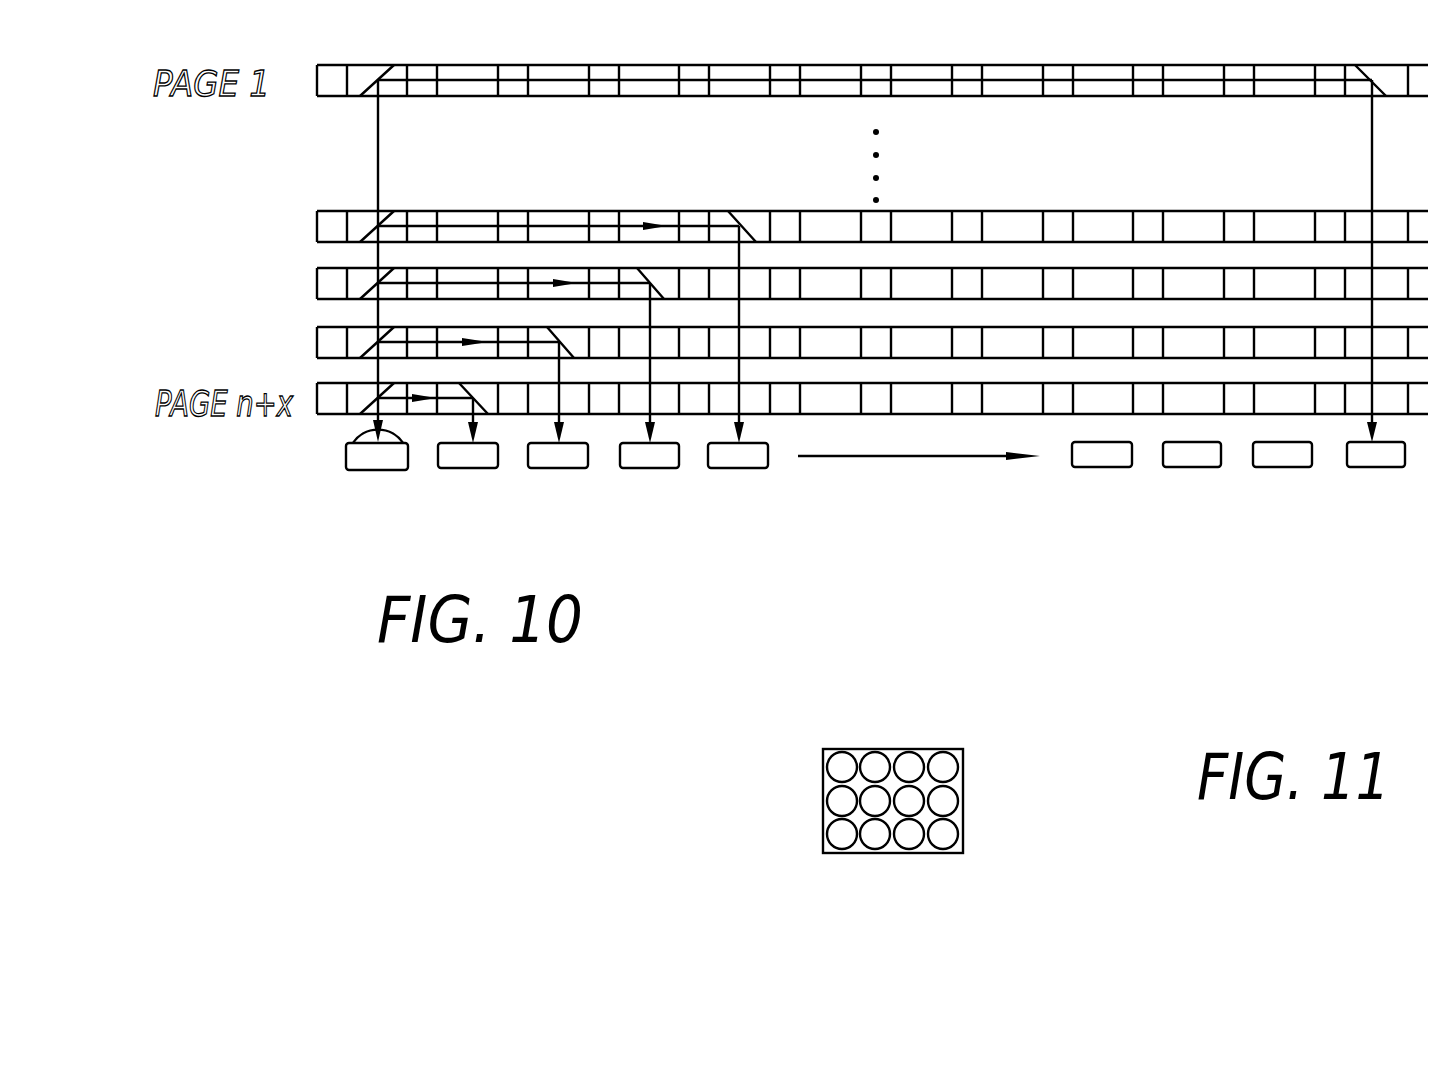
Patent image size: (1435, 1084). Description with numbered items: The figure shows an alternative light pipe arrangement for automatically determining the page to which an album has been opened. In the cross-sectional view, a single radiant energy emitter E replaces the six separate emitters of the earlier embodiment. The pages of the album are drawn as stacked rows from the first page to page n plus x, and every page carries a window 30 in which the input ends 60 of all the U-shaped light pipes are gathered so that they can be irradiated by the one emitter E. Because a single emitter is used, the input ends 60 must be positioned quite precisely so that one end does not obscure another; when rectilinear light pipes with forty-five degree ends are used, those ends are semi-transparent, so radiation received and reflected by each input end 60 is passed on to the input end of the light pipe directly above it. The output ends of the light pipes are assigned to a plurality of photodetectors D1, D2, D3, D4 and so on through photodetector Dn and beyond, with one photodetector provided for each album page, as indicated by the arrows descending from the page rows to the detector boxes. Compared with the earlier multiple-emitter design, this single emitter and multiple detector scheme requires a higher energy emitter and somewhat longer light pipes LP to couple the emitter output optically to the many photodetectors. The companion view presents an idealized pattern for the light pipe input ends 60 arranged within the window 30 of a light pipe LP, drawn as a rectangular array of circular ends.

In FIG. 10, the window 30 is at (472, 97).
In FIG. 11, the window 30 is at (890, 847).
In FIG. 11, the input end 60 is at (850, 742).
In FIG. 11, the light pipe LP is at (961, 796).
In FIG. 10, the radiant energy emitter E is at (345, 458).
In FIG. 10, the photodetector D1 is at (462, 462).
In FIG. 10, the photodetector D2 is at (553, 462).
In FIG. 10, the photodetector D3 is at (645, 462).
In FIG. 10, the photodetector D4 is at (733, 462).
In FIG. 10, the photodetector Dn is at (1093, 457).